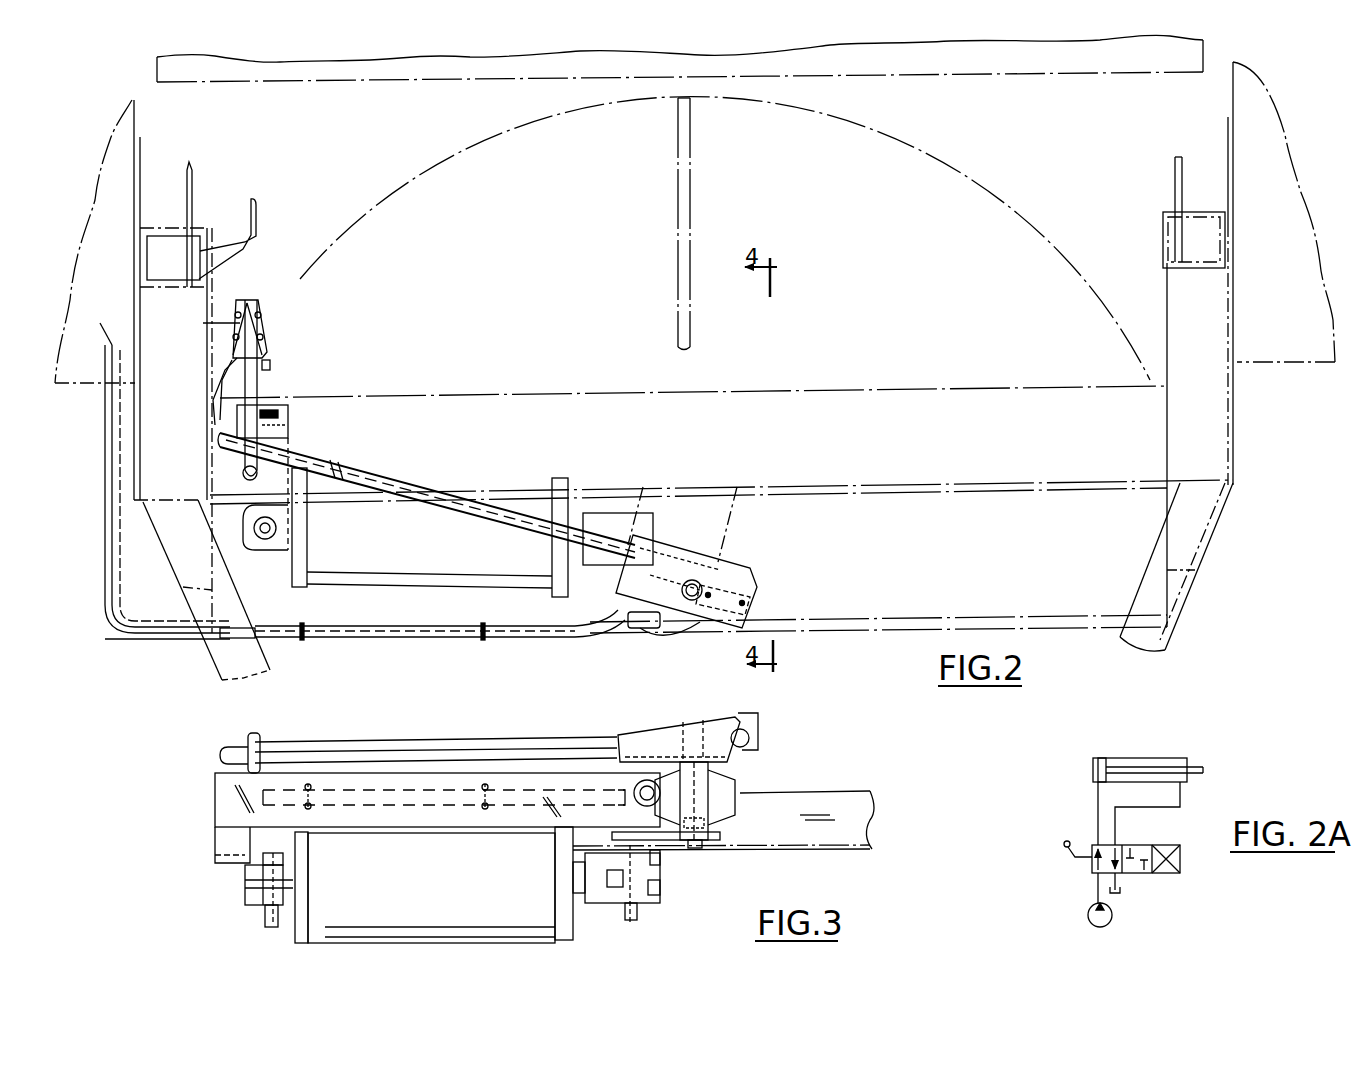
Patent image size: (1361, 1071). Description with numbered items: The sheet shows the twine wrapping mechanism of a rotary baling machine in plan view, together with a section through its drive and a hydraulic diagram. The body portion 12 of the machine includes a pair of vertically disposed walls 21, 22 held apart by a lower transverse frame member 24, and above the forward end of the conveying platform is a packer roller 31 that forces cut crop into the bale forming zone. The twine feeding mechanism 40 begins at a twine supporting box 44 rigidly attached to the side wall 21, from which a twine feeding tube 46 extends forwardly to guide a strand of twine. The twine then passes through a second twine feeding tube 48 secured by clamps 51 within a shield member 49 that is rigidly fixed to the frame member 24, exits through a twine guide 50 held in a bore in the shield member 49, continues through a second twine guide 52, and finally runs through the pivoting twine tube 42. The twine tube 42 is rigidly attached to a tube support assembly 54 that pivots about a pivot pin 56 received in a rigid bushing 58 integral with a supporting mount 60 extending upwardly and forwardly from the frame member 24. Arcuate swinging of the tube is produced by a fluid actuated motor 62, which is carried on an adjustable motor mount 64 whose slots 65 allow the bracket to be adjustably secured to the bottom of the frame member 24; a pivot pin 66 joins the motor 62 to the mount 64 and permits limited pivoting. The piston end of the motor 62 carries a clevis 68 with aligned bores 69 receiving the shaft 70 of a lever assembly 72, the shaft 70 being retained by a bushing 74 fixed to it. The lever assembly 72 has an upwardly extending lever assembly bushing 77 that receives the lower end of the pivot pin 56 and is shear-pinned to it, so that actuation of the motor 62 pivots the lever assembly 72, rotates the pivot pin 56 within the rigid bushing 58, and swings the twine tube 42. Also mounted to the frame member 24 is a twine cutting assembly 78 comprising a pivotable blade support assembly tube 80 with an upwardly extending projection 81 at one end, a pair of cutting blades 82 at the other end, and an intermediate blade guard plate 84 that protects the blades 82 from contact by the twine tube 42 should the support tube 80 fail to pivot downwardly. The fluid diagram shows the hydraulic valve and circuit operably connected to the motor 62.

In FIG. 2, the body portion 12 is at (1236, 416).
In FIG. 2, the side wall 21 is at (140, 430).
In FIG. 2, the wall 22 is at (1233, 385).
In FIG. 2, the lower transverse frame member 24 is at (867, 433).
In FIG. 3, the lower transverse frame member 24 is at (872, 835).
In FIG. 2, the packer roller 31 is at (857, 73).
In FIG. 2, the twine feeding mechanism 40 is at (670, 494).
In FIG. 3, the twine feeding mechanism 40 is at (590, 730).
In FIG. 2, the pivoting twine tube 42 is at (690, 208).
In FIG. 3, the pivoting twine tube 42 is at (308, 743).
In FIG. 2, the twine supporting box 44 is at (85, 385).
In FIG. 2, the twine feeding tube 46 is at (105, 560).
In FIG. 2, the second twine feeding tube 48 is at (360, 634).
In FIG. 3, the second twine feeding tube 48 is at (510, 806).
In FIG. 2, the shield member 49 is at (868, 628).
In FIG. 3, the shield member 49 is at (215, 800).
In FIG. 2, the twine guide 50 is at (637, 630).
In FIG. 3, the twine guide 50 is at (633, 797).
In FIG. 2, the clamps 51 is at (302, 625).
In FIG. 3, the clamps 51 is at (312, 800).
In FIG. 2, the second twine guide 52 is at (757, 590).
In FIG. 3, the second twine guide 52 is at (758, 742).
In FIG. 2, the tube support assembly 54 is at (734, 562).
In FIG. 3, the tube support assembly 54 is at (703, 714).
In FIG. 2, the pivot pin 56 is at (691, 578).
In FIG. 3, the pivot pin 56 is at (692, 848).
In FIG. 3, the rigid bushing 58 is at (710, 778).
In FIG. 2, the supporting mount 60 is at (731, 518).
In FIG. 3, the supporting mount 60 is at (735, 805).
In FIG. 2, the fluid actuated motor 62 is at (390, 578).
In FIG. 3, the fluid actuated motor 62 is at (415, 940).
In FIG. 2A, the fluid actuated motor 62 is at (1140, 758).
In FIG. 2, the adjustable motor mount 64 is at (288, 413).
In FIG. 3, the adjustable motor mount 64 is at (245, 885).
In FIG. 2, the slots 65 is at (280, 426).
In FIG. 2, the pivot pin 66 is at (263, 540).
In FIG. 3, the pivot pin 66 is at (265, 917).
In FIG. 3, the clevis 68 is at (655, 900).
In FIG. 3, the aligned bores 69 is at (628, 862).
In FIG. 3, the shaft 70 is at (632, 921).
In FIG. 3, the lever assembly 72 is at (722, 842).
In FIG. 3, the bushing 74 is at (655, 882).
In FIG. 3, the lever assembly bushing 77 is at (713, 825).
In FIG. 2, the twine cutting assembly 78 is at (279, 347).
In FIG. 2, the blade support assembly tube 80 is at (258, 385).
In FIG. 3, the blade support assembly tube 80 is at (220, 763).
In FIG. 2, the upwardly extending projection 81 is at (243, 472).
In FIG. 3, the upwardly extending projection 81 is at (250, 736).
In FIG. 2, the cutting blades 82 is at (205, 324).
In FIG. 2, the blade guard plate 84 is at (270, 365).